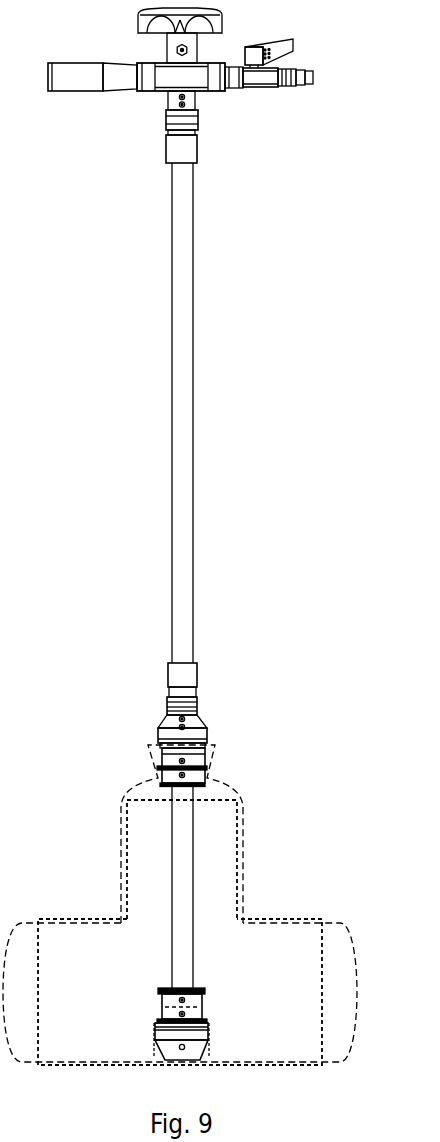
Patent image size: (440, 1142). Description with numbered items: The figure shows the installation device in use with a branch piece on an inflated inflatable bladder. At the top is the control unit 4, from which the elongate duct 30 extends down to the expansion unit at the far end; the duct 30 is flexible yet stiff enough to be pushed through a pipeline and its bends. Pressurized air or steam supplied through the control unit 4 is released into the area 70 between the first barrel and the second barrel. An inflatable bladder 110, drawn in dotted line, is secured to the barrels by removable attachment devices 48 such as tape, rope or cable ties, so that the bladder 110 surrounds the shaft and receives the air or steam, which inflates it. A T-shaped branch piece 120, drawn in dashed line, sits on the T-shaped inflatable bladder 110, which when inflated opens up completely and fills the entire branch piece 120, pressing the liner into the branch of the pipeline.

The control unit 4 is at (240, 147).
The elongate duct 30 is at (180, 500).
The removable attachment devices 48 is at (157, 768).
The area between the first barrel and the second barrel 70 is at (157, 896).
The inflatable bladder 110 is at (223, 777).
The branch piece 120 is at (258, 920).